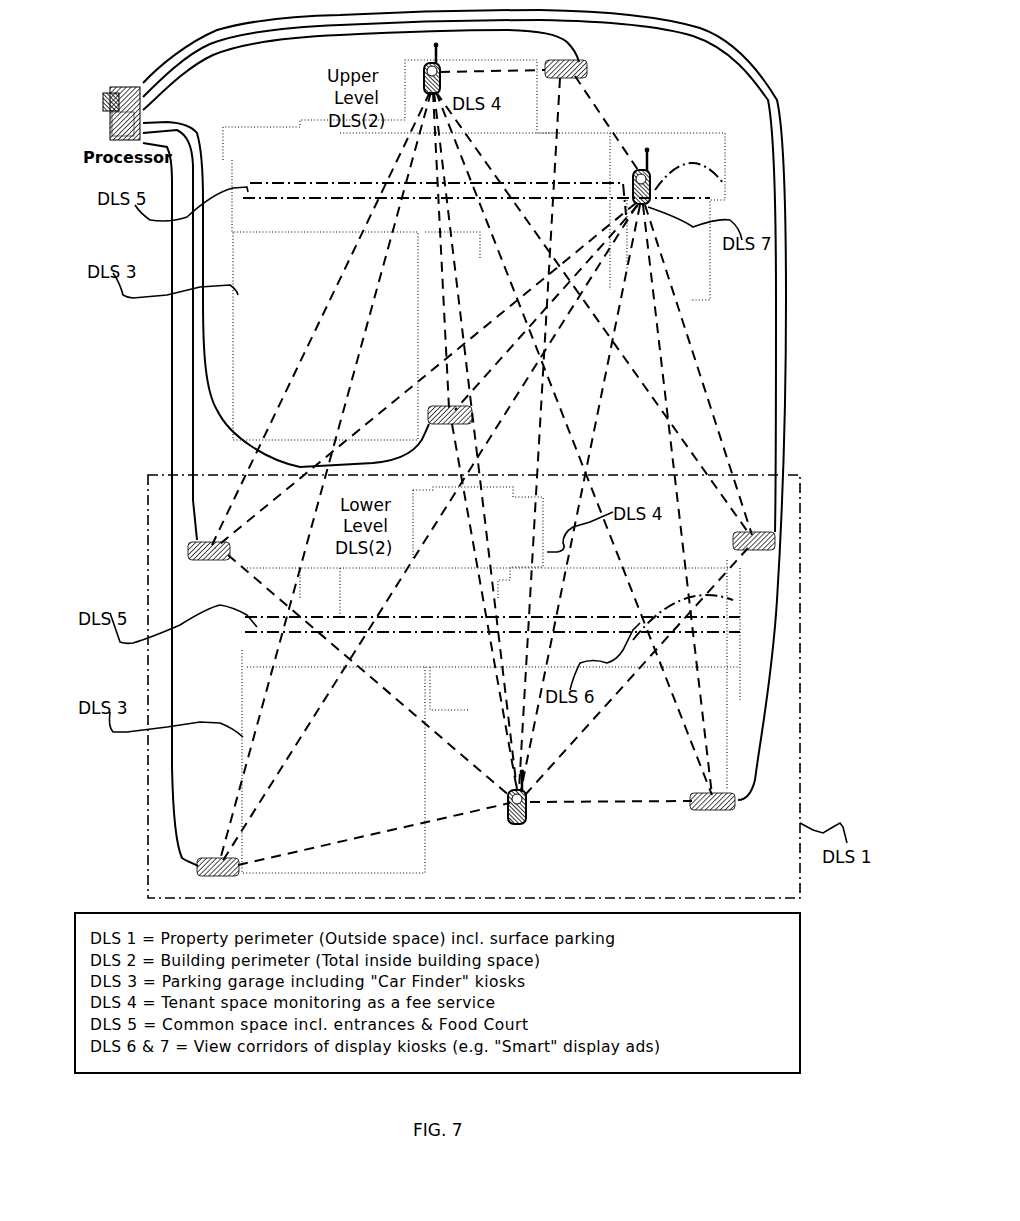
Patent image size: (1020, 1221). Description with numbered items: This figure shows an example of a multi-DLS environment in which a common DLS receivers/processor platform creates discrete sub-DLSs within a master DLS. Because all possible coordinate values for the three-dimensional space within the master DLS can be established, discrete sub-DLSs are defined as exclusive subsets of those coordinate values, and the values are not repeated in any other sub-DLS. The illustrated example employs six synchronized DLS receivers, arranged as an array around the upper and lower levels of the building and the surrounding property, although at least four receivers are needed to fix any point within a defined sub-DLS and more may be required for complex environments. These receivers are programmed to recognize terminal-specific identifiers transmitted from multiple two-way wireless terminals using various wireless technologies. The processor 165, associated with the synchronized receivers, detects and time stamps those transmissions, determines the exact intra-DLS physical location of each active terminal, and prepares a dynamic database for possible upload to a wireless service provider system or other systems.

The processor 165 is at (107, 93).